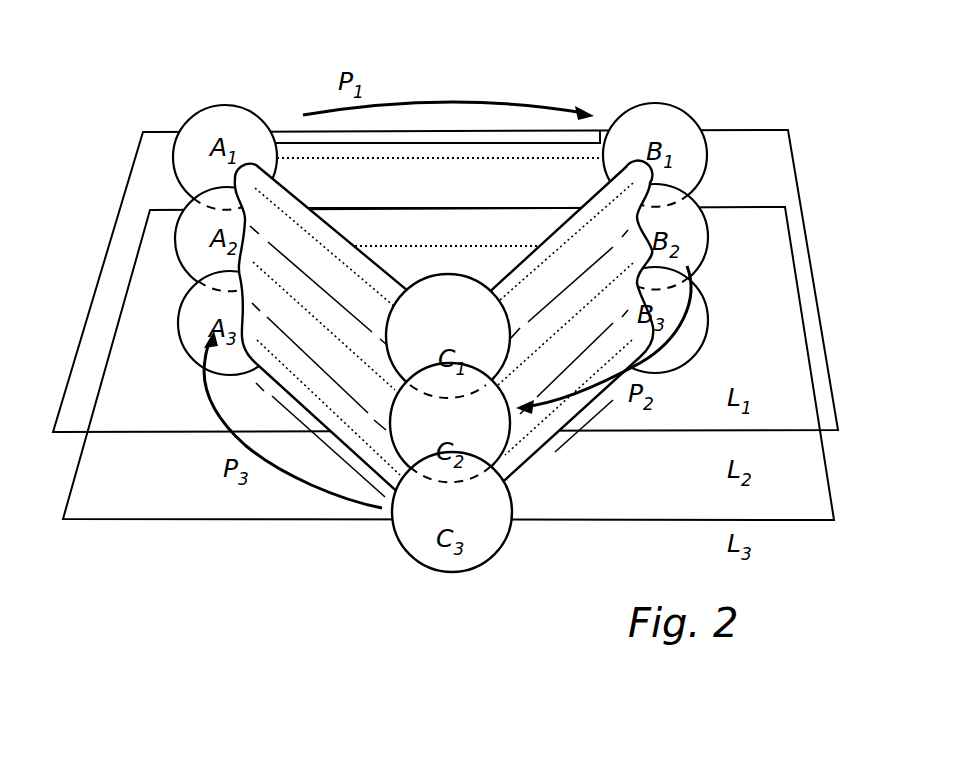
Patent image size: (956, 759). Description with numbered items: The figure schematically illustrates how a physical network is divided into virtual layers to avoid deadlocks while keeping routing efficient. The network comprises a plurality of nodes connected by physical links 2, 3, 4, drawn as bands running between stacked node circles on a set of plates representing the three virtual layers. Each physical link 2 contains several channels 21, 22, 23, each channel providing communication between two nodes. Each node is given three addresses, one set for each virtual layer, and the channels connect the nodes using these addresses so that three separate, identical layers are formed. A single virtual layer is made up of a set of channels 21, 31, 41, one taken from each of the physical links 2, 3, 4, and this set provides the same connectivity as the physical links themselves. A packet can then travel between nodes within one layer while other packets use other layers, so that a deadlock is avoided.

The physical link 2 is at (332, 232).
The channel 21 is at (358, 278).
The channel 22 is at (355, 357).
The channel 23 is at (373, 453).
The physical link 3 is at (431, 130).
The channel 31 is at (487, 158).
The physical link 4 is at (590, 197).
The channel 41 is at (547, 248).